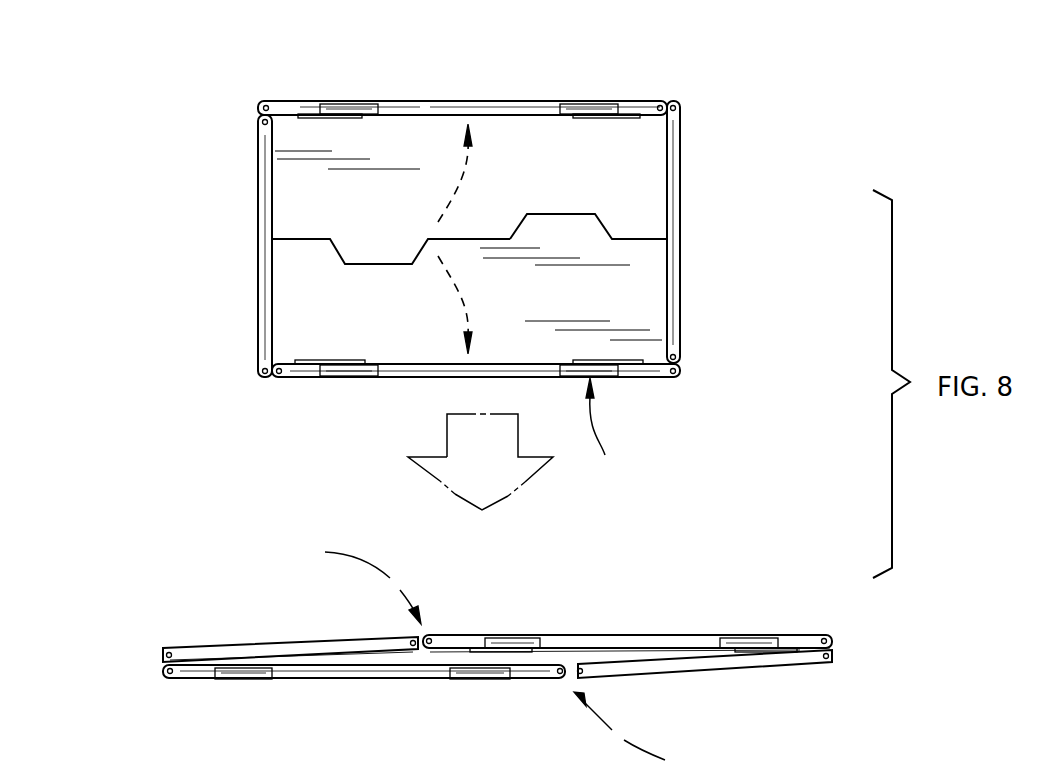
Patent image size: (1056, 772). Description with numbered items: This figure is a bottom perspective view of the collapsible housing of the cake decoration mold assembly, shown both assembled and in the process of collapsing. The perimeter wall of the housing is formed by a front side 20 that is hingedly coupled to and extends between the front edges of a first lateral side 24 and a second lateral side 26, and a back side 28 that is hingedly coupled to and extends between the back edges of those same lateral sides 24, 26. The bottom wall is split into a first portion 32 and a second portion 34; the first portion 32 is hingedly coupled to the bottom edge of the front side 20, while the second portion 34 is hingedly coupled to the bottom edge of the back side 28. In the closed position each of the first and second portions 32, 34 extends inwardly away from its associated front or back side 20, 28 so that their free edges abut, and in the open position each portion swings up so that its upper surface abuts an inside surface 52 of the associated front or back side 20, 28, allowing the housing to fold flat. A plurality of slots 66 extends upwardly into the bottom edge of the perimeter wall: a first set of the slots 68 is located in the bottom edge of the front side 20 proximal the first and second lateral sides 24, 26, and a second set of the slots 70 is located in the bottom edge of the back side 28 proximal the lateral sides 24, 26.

The front side 20 is at (465, 101).
The first lateral side 24 is at (680, 205).
The second lateral side 26 is at (259, 226).
The back side 28 is at (405, 378).
The first portion 32 is at (637, 290).
The second portion 34 is at (630, 170).
The inside surface 52 is at (345, 645).
The slot 66 is at (605, 429).
The first set of the slots 68 is at (318, 104).
The second set of the slots 70 is at (320, 376).